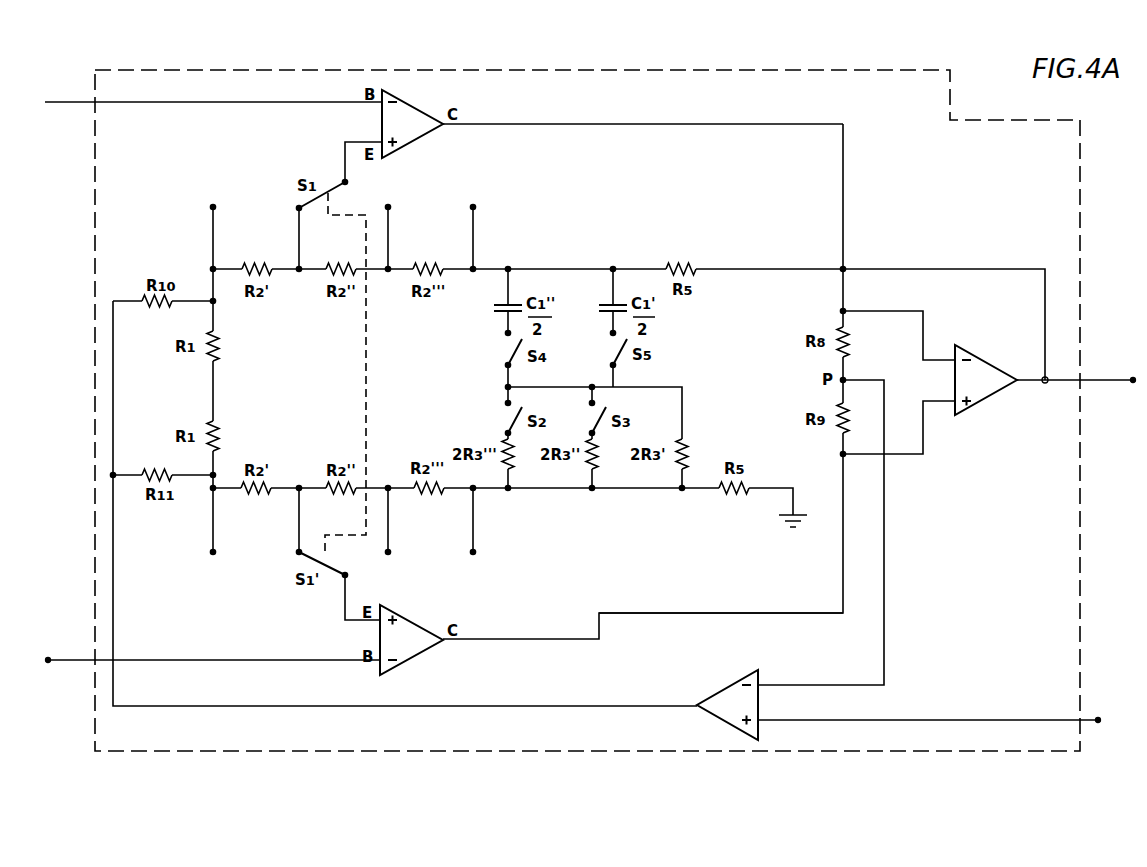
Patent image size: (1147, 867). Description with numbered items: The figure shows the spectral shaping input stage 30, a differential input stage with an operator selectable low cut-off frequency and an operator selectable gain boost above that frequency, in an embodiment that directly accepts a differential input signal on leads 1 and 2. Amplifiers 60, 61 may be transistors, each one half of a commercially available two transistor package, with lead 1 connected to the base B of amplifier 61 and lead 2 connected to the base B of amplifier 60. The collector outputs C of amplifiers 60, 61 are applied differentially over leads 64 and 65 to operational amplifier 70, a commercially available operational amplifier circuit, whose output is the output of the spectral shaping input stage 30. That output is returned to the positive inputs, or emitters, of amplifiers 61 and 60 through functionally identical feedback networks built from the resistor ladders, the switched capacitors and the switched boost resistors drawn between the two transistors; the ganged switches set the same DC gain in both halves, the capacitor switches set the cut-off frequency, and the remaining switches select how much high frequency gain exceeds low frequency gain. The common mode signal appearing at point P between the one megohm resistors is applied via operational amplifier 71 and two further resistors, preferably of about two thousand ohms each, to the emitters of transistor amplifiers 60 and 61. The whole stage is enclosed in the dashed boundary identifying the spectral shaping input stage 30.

The lead 1 is at (70, 104).
The lead 2 is at (70, 662).
The spectral shaping input stage 30 is at (1082, 182).
The amplifier 60 is at (424, 651).
The amplifier 61 is at (417, 106).
The lead 64 is at (683, 611).
The lead 65 is at (681, 126).
The operational amplifier 70 is at (989, 360).
The operational amplifier 71 is at (722, 690).